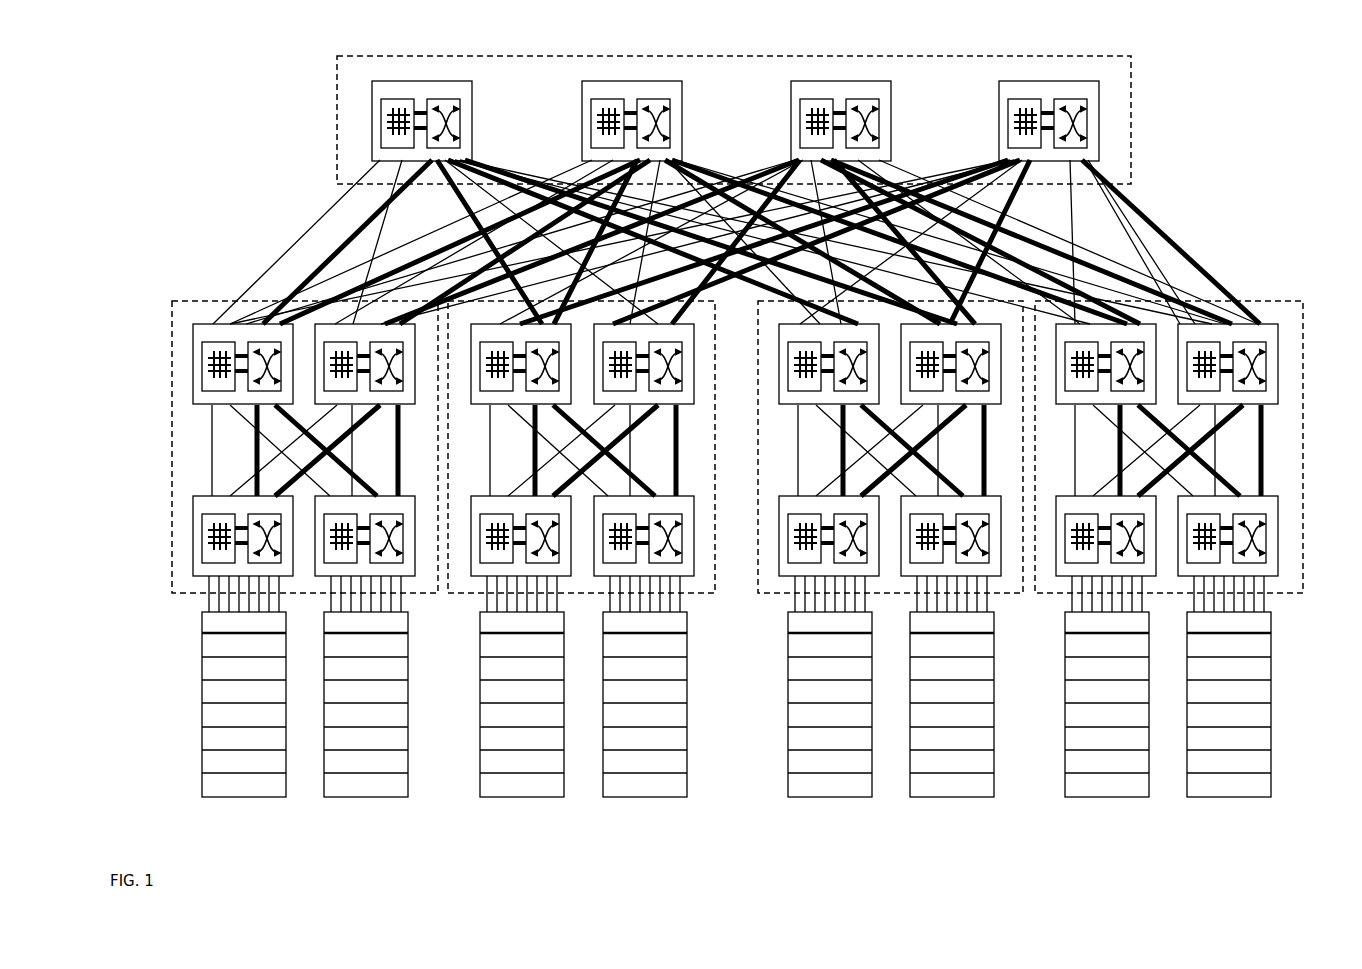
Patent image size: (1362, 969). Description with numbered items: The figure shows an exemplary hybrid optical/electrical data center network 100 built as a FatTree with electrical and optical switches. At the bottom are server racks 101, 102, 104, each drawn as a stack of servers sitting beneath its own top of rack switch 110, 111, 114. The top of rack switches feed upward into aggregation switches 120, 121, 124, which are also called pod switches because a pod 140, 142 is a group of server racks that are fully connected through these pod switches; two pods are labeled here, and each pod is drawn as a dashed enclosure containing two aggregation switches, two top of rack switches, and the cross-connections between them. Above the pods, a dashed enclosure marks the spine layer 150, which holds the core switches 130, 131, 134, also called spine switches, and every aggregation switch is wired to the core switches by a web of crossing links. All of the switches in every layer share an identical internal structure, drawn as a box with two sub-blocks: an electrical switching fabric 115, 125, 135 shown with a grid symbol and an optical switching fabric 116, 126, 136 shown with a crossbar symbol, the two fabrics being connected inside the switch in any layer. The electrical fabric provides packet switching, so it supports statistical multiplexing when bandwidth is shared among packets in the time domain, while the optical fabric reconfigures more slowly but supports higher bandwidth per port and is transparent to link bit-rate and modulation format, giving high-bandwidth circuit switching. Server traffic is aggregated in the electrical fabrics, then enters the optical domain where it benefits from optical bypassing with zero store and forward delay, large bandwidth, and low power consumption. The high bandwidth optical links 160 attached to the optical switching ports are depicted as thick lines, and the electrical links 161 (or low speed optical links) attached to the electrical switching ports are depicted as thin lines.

The hybrid optical/electrical data center network 100 is at (732, 443).
The spine layer 150 is at (337, 128).
The core switch 130 is at (370, 98).
The core switch 131 is at (648, 111).
The core switch 134 is at (998, 98).
The electrical switching fabric 135 is at (800, 112).
The optical switching fabric 136 is at (672, 112).
The high bandwidth optical link 160 is at (1122, 236).
The electrical link 161 is at (1150, 222).
The pod 140 is at (172, 550).
The pod 142 is at (1303, 570).
The aggregation switch 120 is at (192, 342).
The aggregation switch 121 is at (416, 362).
The aggregation switch 124 is at (1279, 352).
The electrical switching fabric 125 is at (617, 391).
The optical switching fabric 126 is at (684, 378).
The top of rack switch 110 is at (192, 512).
The top of rack switch 111 is at (416, 507).
The top of rack switch 114 is at (1279, 514).
The electrical switching fabric 115 is at (617, 563).
The optical switching fabric 116 is at (684, 548).
The server rack 101 is at (196, 762).
The server rack 102 is at (317, 762).
The server rack 104 is at (1185, 762).